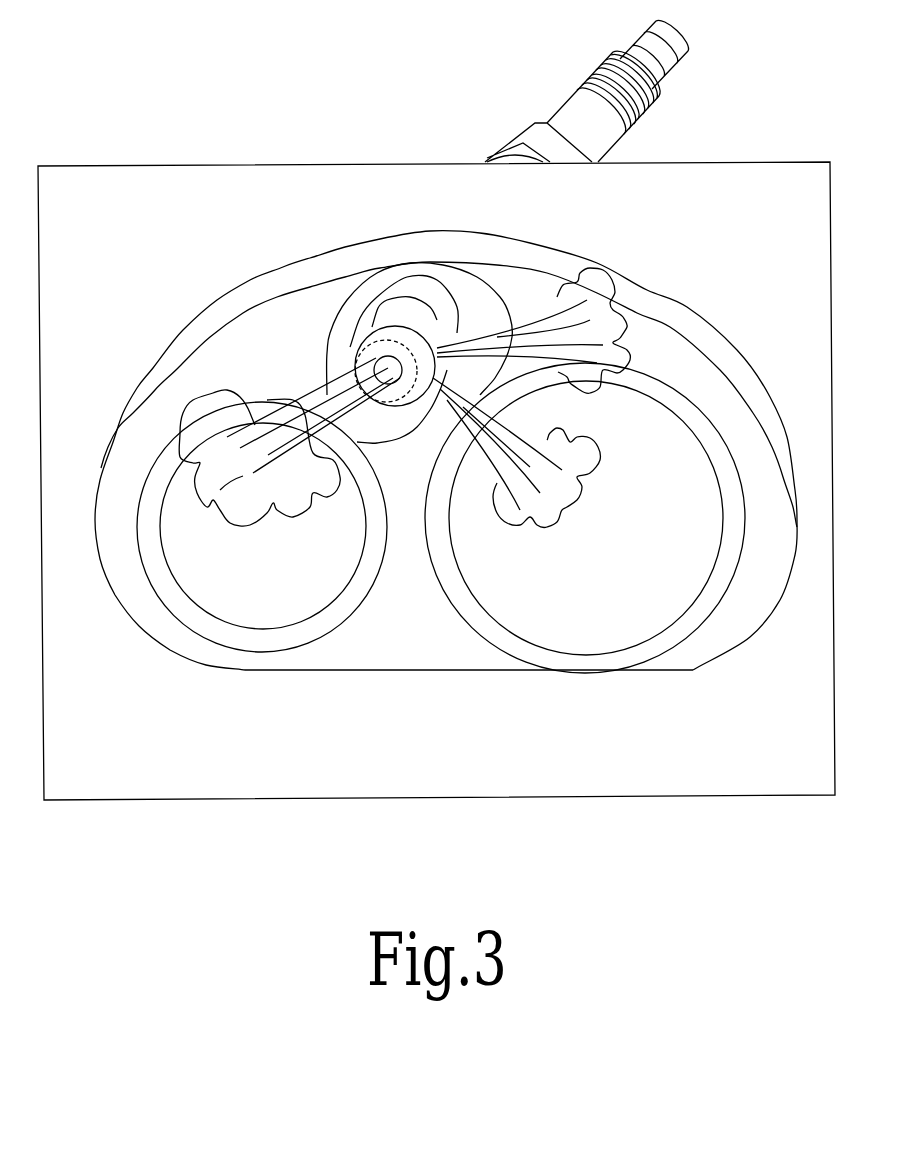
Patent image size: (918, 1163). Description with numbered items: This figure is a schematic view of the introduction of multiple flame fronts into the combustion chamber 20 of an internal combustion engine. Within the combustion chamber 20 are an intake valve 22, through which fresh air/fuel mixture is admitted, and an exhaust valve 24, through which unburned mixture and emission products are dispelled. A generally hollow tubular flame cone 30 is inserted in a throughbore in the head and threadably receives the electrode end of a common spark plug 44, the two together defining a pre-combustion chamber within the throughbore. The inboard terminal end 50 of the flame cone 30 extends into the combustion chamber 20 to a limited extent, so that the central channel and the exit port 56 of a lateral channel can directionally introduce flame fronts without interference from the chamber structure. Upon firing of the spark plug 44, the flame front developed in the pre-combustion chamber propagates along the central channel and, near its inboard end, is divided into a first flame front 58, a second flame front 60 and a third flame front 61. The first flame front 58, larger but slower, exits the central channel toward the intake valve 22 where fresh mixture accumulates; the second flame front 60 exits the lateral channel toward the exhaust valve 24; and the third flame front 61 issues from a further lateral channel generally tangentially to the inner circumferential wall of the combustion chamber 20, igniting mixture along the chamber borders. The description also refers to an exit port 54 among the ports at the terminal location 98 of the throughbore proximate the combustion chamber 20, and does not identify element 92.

The combustion chamber 20 is at (665, 360).
The intake valve 22 is at (295, 592).
The exhaust valve 24 is at (655, 610).
The flame cone 30 is at (453, 283).
The spark plug 44 is at (575, 120).
The inboard terminal end 50 is at (387, 305).
The exit port 54 is at (378, 392).
The exit port 56 is at (417, 436).
The first flame front 58 is at (207, 500).
The second flame front 60 is at (563, 510).
The third flame front 61 is at (633, 348).
The plug shell end 92 is at (455, 335).
The terminal location 98 is at (740, 388).